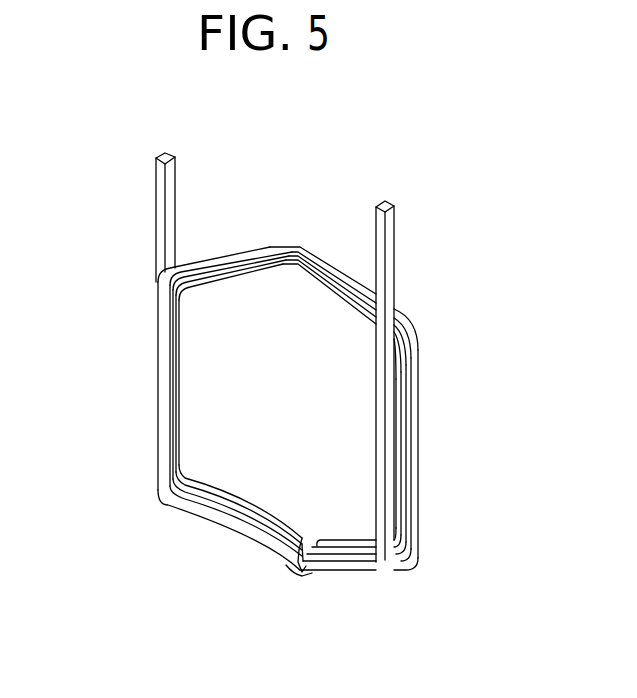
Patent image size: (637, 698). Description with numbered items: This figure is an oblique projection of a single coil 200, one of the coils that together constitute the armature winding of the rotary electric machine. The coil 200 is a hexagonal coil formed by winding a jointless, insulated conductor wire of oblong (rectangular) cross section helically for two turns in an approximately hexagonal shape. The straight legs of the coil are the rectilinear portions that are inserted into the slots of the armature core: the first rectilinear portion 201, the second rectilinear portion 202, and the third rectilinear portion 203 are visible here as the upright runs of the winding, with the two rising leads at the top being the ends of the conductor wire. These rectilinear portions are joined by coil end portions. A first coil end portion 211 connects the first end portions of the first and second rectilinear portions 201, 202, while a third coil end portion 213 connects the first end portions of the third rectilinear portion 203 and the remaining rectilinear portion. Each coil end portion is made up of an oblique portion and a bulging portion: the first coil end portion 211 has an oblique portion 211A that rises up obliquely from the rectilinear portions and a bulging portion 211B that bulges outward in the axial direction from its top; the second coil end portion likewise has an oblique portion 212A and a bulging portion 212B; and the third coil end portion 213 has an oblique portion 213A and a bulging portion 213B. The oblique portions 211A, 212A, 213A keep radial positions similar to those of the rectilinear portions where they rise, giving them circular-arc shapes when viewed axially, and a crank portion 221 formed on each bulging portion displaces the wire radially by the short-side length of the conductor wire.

The coil 200 is at (95, 105).
The first rectilinear portion 201 is at (179, 367).
The second rectilinear portion 202 is at (418, 422).
The third rectilinear portion 203 is at (165, 384).
The first coil end portion 211 is at (344, 188).
The oblique portion 211A is at (248, 497).
The bulging portion 211B is at (301, 545).
The oblique portion 212A is at (232, 262).
The bulging portion 212B is at (303, 247).
The third coil end portion 213 is at (140, 556).
The oblique portion 213A is at (233, 533).
The bulging portion 213B is at (280, 564).
The crank portion 221 is at (298, 576).